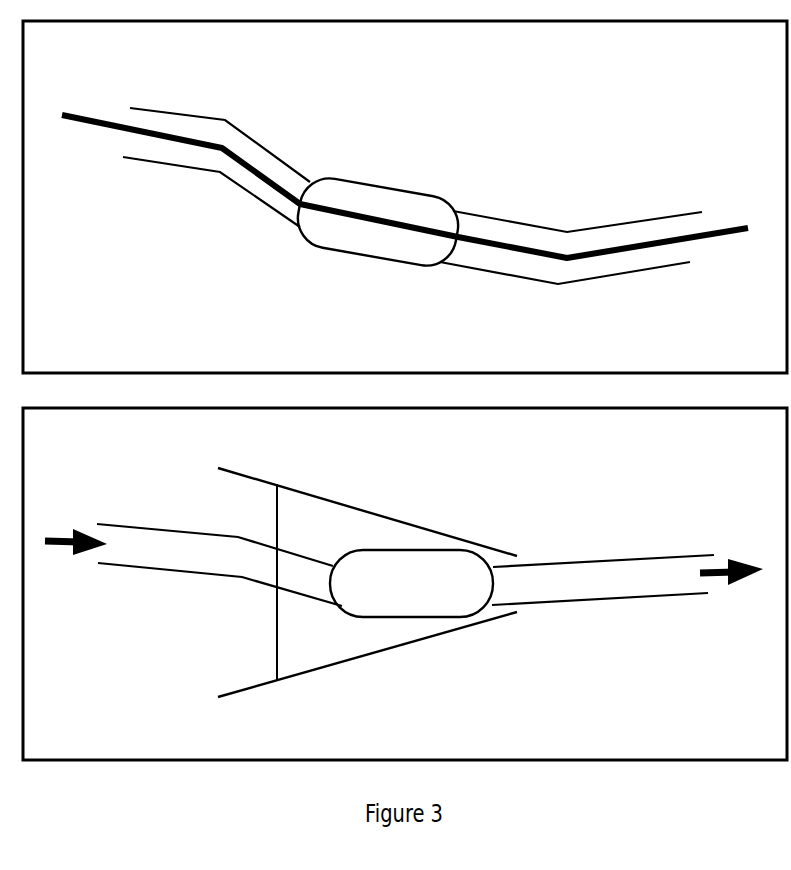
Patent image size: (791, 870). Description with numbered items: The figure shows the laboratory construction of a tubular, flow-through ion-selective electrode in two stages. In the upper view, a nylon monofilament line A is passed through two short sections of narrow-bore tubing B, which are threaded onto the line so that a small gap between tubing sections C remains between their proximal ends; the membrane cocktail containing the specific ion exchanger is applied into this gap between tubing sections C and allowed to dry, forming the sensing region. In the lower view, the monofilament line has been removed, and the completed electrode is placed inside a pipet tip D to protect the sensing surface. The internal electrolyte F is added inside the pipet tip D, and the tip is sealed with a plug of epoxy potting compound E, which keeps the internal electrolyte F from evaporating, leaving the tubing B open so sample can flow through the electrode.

The monofilament line A is at (405, 186).
The tubing B is at (412, 196).
The gap between tubing sections C is at (378, 212).
The pipet tip D is at (367, 512).
The plug of epoxy potting compound E is at (277, 630).
The internal electrolyte F is at (367, 654).